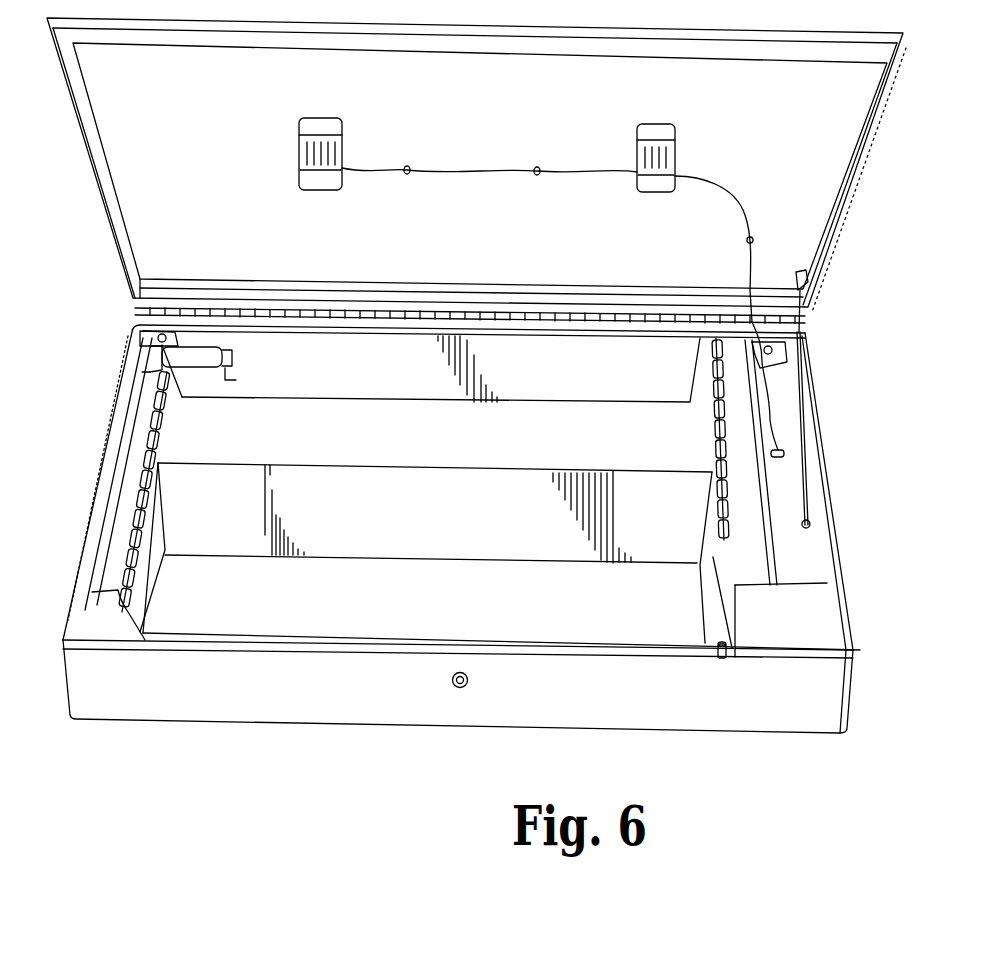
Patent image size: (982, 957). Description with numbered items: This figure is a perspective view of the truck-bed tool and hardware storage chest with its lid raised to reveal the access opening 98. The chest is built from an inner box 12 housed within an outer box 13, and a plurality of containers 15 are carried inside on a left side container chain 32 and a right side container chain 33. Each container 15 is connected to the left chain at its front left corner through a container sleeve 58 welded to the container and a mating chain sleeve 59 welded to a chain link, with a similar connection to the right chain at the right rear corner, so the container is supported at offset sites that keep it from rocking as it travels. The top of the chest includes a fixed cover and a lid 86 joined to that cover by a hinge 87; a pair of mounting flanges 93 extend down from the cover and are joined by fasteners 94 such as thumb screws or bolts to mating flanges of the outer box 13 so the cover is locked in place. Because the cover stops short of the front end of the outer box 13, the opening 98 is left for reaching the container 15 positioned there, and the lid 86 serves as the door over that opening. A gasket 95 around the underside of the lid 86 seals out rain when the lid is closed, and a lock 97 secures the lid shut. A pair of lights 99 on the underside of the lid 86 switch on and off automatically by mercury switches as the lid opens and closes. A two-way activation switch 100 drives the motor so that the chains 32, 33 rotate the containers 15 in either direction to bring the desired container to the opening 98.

The inner box 12 is at (812, 548).
The outer box 13 is at (840, 562).
The container 15 is at (526, 403).
The left side container chain 32 is at (152, 432).
The right side container chain 33 is at (712, 418).
The container sleeve 58 is at (212, 372).
The chain sleeve 59 is at (152, 372).
The lid 86 is at (857, 183).
The hinge 87 is at (575, 316).
The mounting flange 93 is at (146, 340).
The fastener 94 is at (160, 345).
The gasket 95 is at (90, 112).
The lock 97 is at (469, 678).
The access opening 98 is at (186, 498).
The light 99 is at (336, 122).
The two-way activation switch 100 is at (720, 655).